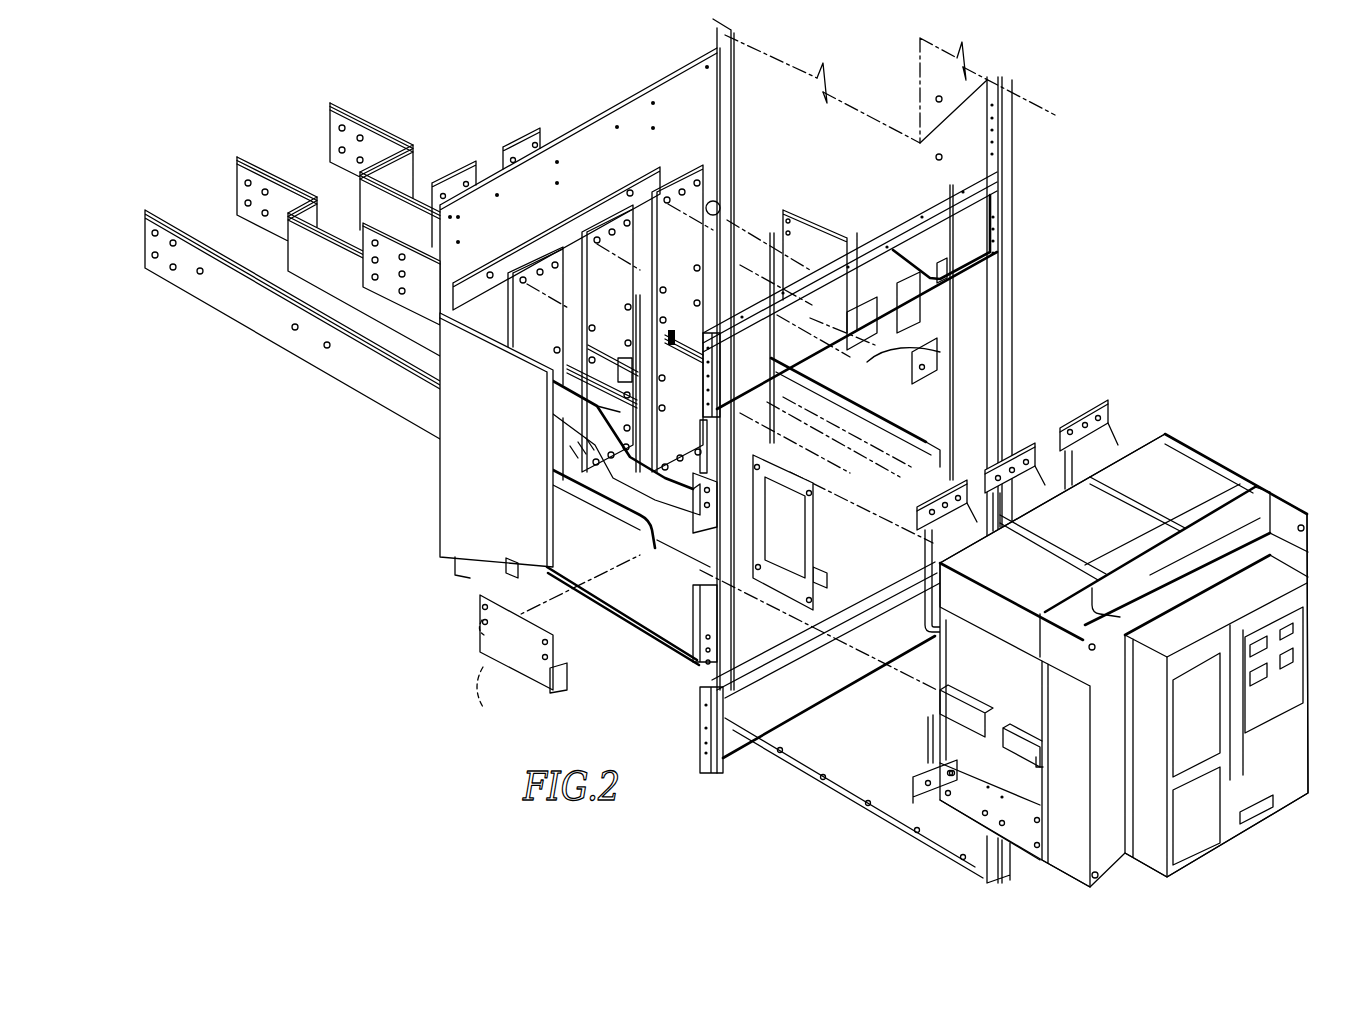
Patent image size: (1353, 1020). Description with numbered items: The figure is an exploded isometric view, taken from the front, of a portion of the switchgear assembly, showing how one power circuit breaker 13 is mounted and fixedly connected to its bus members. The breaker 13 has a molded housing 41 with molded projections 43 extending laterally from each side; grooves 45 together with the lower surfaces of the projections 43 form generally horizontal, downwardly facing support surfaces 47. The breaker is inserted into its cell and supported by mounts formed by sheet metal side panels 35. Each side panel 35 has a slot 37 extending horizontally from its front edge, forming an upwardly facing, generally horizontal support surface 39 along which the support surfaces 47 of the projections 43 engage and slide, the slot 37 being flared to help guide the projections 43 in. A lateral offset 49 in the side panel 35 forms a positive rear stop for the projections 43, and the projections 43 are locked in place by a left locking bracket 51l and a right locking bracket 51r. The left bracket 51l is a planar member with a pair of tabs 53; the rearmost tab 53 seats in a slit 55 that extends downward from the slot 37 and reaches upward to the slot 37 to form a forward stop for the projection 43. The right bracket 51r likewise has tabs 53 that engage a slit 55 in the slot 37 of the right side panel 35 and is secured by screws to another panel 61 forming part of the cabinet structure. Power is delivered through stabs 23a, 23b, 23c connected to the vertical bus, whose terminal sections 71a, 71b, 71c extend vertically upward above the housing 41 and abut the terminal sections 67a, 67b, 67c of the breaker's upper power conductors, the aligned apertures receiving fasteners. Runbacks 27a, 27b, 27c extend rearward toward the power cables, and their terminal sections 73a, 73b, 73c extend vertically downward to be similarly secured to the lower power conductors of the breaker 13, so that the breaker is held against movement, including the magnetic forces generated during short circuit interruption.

The power circuit breaker 13 is at (1124, 624).
The stab 23a is at (532, 148).
The stab 23b is at (460, 182).
The stab 23c is at (378, 224).
The runback 27a is at (365, 118).
The runback 27b is at (258, 160).
The runback 27c is at (225, 297).
The side panel 35 is at (777, 278).
The slot 37 is at (935, 340).
The support surface 39 is at (887, 433).
The molded housing 41 is at (1153, 460).
The molded projection 43 is at (1022, 731).
The groove 45 is at (988, 737).
The support surface 47 is at (1038, 765).
The lateral offset 49 is at (553, 470).
The left locking bracket 51l is at (543, 623).
The right locking bracket 51r is at (797, 487).
The tab 53 is at (553, 690).
The slit 55 is at (870, 412).
The panel 61 is at (900, 267).
The terminal section 67a is at (1100, 400).
The terminal section 67b is at (1043, 452).
The terminal section 67c is at (918, 510).
The terminal section 71a is at (697, 176).
The terminal section 71b is at (600, 232).
The terminal section 71c is at (535, 272).
The terminal section 73a is at (700, 430).
The terminal section 73b is at (617, 412).
The terminal section 73c is at (510, 557).